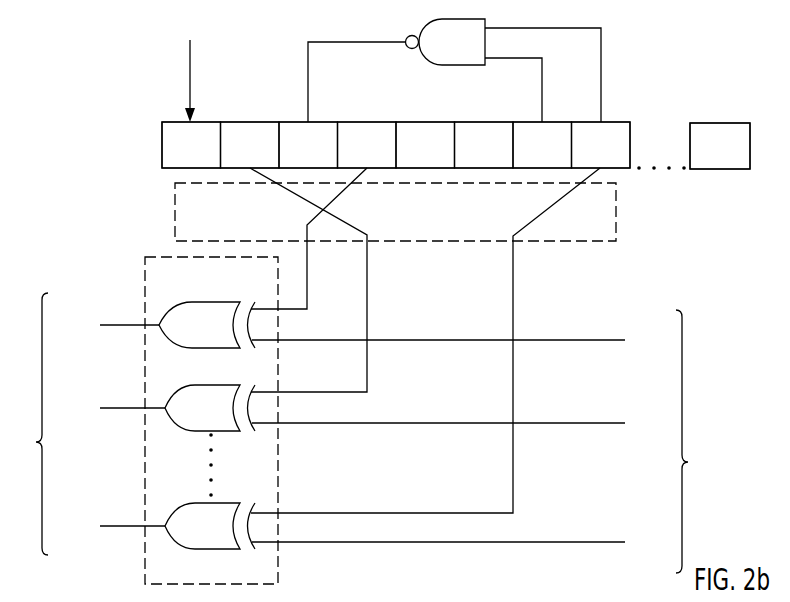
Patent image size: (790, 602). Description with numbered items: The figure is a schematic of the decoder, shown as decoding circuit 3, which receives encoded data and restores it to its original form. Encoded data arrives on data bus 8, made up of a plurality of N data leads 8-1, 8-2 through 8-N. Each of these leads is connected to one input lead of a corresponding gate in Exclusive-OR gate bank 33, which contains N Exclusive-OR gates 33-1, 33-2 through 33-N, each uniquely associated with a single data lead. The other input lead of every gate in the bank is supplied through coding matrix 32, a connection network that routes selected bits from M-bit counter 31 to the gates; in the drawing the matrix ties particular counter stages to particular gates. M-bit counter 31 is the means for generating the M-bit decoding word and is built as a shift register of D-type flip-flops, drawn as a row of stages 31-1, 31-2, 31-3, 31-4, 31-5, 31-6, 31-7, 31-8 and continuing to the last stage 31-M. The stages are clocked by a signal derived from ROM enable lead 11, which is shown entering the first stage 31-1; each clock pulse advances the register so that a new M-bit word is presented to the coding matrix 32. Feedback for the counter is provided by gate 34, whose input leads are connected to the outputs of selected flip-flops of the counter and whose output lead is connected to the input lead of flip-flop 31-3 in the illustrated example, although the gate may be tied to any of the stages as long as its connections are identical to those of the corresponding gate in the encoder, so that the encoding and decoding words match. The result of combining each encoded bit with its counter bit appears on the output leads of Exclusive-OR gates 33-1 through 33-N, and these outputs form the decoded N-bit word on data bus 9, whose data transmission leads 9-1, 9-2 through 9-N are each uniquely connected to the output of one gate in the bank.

The decoder circuit 3 is at (96, 168).
The ROM enable lead 11 is at (190, 67).
The M-bit counter 31 is at (723, 176).
The D-type flip-flop 31-1 is at (172, 161).
The D-type flip-flop 31-2 is at (231, 161).
The D-type flip-flop 31-3 is at (289, 161).
The D-type flip-flop 31-4 is at (348, 161).
The D-type flip-flop 31-5 is at (406, 161).
The D-type flip-flop 31-6 is at (465, 161).
The D-type flip-flop 31-7 is at (523, 161).
The D-type flip-flop 31-8 is at (582, 161).
The D-type flip-flop 31-M is at (700, 162).
The coding matrix 32 is at (622, 217).
The Exclusive-OR gate bank 33 is at (245, 422).
The Exclusive-OR gate 33-1 is at (186, 337).
The Exclusive-OR gate 33-2 is at (189, 420).
The Exclusive-OR gate 33-N is at (189, 538).
The gate 34 is at (453, 65).
The data bus 8 is at (697, 441).
The data lead 8-1 is at (460, 342).
The data lead 8-2 is at (460, 425).
The data lead 8-N is at (460, 544).
The data bus 9 is at (26, 424).
The data transmission lead 9-1 is at (108, 325).
The data transmission lead 9-2 is at (111, 408).
The data transmission lead 9-N is at (111, 526).